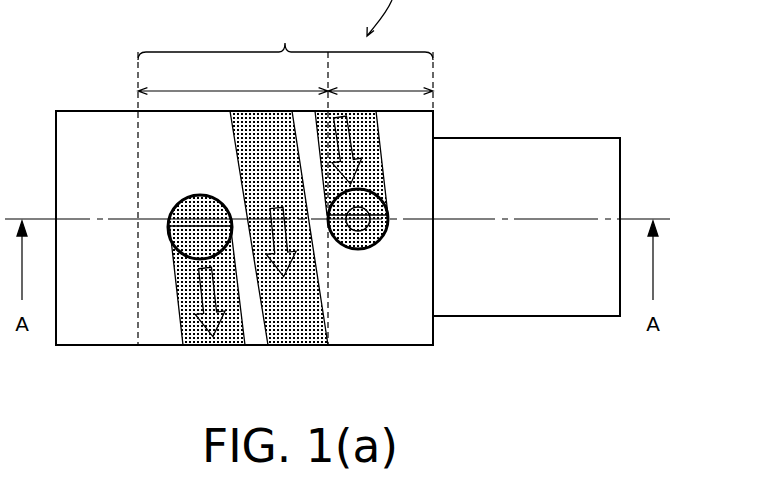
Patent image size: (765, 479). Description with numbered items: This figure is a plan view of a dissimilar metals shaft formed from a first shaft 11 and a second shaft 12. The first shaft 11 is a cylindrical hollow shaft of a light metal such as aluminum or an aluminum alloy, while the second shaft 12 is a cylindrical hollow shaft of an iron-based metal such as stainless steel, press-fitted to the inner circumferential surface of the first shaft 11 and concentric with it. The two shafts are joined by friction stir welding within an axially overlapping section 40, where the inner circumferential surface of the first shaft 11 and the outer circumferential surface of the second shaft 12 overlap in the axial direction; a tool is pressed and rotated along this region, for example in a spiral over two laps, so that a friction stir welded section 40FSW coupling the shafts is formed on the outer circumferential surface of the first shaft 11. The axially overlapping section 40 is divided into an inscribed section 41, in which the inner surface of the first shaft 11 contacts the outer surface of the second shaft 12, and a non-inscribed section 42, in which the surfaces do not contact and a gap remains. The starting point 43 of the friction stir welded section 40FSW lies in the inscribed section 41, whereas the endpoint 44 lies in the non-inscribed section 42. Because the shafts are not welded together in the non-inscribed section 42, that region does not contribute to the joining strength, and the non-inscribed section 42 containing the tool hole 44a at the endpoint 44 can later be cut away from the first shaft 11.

The first shaft 11 is at (90, 100).
The second shaft 12 is at (508, 128).
The axially overlapping section 40 is at (285, 182).
The inscribed section 41 is at (233, 80).
The non-inscribed section 42 is at (380, 80).
The starting point 43 is at (188, 188).
The endpoint 44 is at (365, 257).
The tool hole 44a is at (363, 228).
The friction stir welded section 40FSW is at (171, 330).